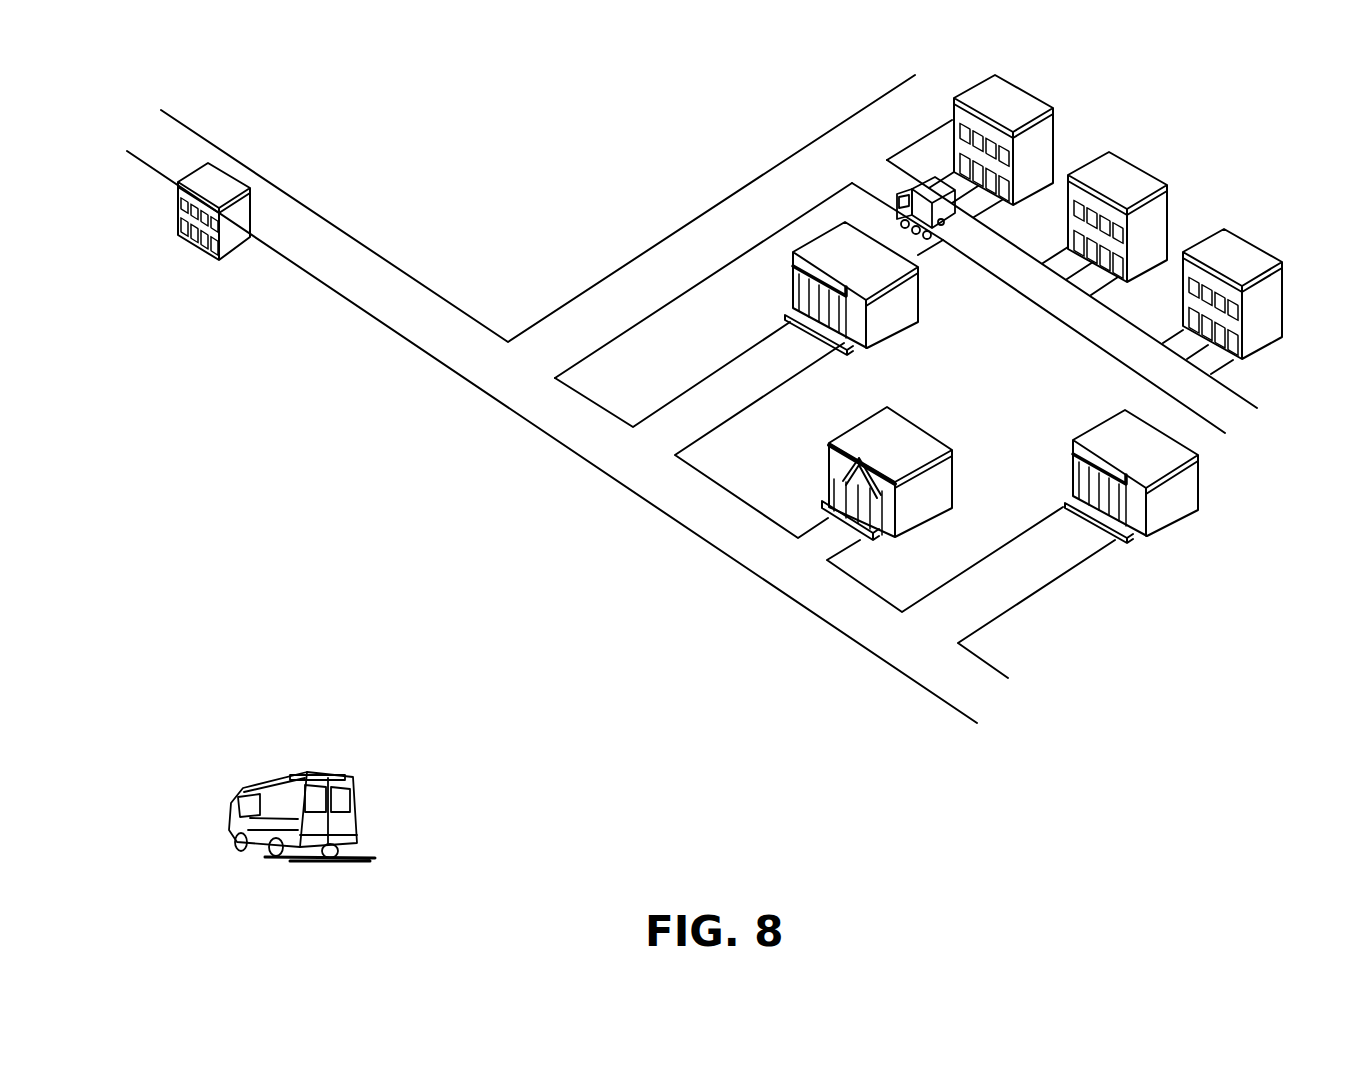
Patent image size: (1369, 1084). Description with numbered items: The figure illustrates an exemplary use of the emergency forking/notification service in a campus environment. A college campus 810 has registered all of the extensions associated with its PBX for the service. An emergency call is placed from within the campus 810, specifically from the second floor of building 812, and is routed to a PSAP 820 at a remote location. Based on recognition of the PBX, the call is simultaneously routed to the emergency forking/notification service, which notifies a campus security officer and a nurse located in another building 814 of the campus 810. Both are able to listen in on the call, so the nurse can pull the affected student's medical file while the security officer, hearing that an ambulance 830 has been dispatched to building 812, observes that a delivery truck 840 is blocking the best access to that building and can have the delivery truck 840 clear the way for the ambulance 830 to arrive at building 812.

The college campus 810 is at (687, 159).
The building 812 is at (1169, 197).
The another building 814 is at (1198, 477).
The PSAP 820 is at (179, 222).
The ambulance 830 is at (352, 775).
The delivery truck 840 is at (903, 200).